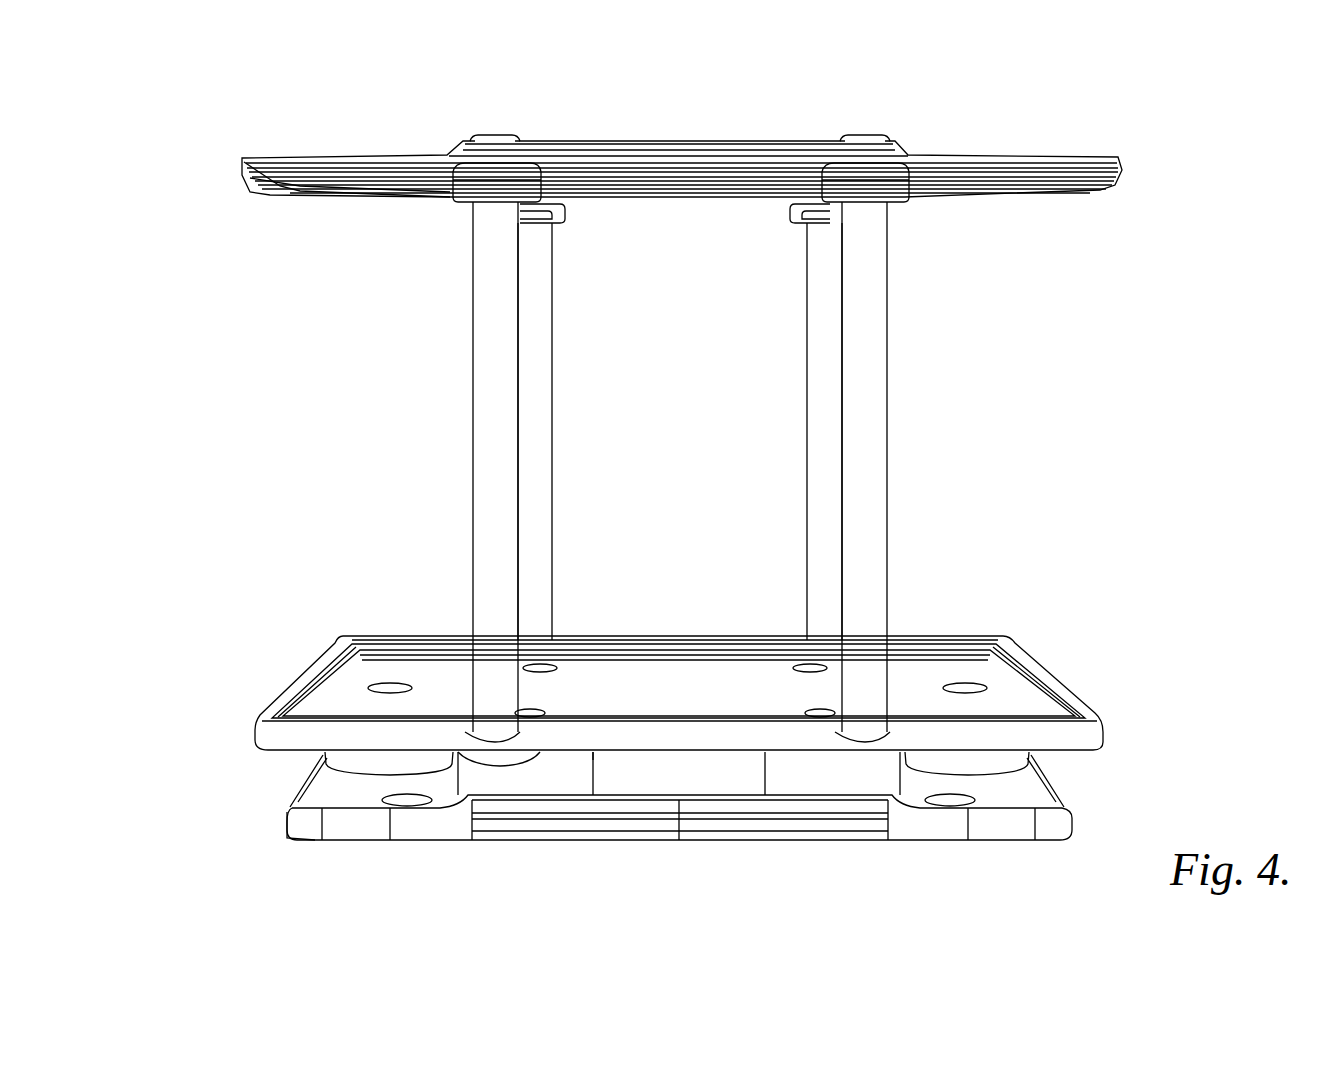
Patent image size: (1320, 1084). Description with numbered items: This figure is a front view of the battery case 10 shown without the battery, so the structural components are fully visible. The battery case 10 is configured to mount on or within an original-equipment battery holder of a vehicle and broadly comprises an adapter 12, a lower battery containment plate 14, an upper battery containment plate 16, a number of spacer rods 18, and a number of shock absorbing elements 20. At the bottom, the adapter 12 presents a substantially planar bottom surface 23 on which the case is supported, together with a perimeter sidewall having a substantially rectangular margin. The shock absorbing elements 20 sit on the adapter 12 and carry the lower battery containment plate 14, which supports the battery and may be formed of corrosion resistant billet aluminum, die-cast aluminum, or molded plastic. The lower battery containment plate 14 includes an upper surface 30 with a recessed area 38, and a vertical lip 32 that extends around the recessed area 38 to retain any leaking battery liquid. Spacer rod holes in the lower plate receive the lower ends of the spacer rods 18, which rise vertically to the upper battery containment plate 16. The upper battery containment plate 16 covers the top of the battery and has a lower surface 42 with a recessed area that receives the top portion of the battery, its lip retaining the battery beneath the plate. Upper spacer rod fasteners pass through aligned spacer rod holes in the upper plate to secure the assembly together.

The battery case 10 is at (218, 751).
The adapter 12 is at (631, 833).
The lower battery containment plate 14 is at (723, 653).
The upper battery containment plate 16 is at (1118, 160).
The spacer rods 18 is at (537, 323).
The shock absorbing elements 20 is at (830, 780).
The bottom surface 23 is at (306, 838).
The upper surface 30 is at (975, 660).
The vertical lip 32 is at (1040, 678).
The recessed area 38 is at (647, 690).
The lower surface 42 is at (280, 185).